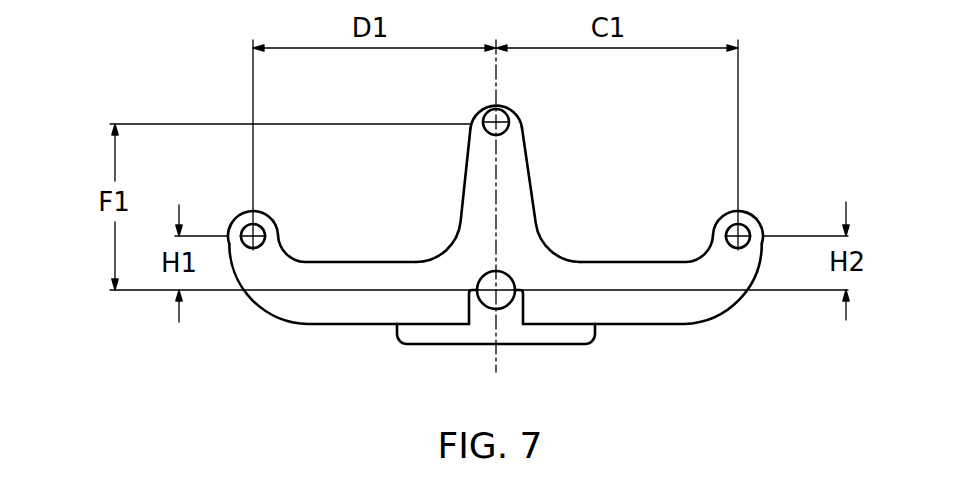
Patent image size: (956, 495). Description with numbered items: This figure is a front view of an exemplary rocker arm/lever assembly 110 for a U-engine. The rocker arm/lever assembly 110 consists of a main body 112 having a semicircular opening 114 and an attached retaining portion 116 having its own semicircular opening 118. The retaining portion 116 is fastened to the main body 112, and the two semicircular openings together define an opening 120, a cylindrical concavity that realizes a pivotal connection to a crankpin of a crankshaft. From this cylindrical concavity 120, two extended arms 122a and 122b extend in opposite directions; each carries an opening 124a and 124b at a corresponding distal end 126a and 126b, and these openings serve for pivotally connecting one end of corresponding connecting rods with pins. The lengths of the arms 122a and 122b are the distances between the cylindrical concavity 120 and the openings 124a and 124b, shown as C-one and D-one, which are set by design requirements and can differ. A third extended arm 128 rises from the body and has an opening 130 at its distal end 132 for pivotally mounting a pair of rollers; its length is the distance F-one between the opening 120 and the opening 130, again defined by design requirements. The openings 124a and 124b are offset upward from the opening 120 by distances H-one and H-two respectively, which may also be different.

The rocker arm/lever assembly 110 is at (652, 363).
The main body 112 is at (305, 298).
The semicircular opening 114 is at (482, 277).
The retaining portion 116 is at (430, 346).
The semicircular opening 118 is at (502, 308).
The opening 120 is at (481, 302).
The extended arm 122a is at (323, 323).
The extended arm 122b is at (673, 322).
The opening 124a is at (262, 226).
The opening 124b is at (730, 225).
The distal end 126a is at (236, 218).
The distal end 126b is at (756, 218).
The extended arm 128 is at (528, 163).
The opening 130 is at (506, 112).
The distal end 132 is at (477, 104).